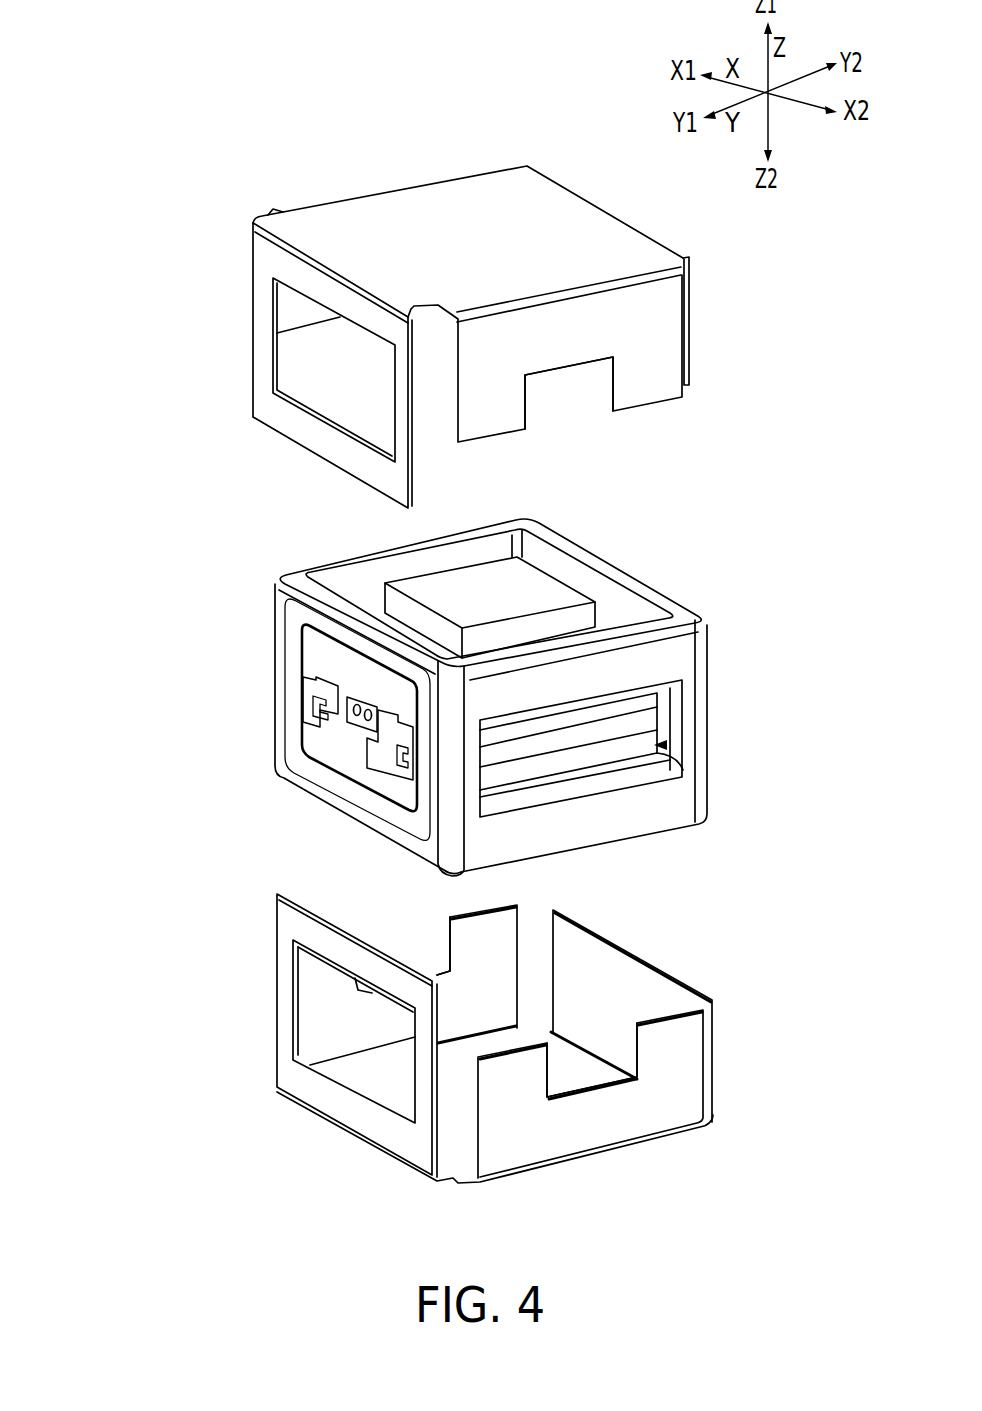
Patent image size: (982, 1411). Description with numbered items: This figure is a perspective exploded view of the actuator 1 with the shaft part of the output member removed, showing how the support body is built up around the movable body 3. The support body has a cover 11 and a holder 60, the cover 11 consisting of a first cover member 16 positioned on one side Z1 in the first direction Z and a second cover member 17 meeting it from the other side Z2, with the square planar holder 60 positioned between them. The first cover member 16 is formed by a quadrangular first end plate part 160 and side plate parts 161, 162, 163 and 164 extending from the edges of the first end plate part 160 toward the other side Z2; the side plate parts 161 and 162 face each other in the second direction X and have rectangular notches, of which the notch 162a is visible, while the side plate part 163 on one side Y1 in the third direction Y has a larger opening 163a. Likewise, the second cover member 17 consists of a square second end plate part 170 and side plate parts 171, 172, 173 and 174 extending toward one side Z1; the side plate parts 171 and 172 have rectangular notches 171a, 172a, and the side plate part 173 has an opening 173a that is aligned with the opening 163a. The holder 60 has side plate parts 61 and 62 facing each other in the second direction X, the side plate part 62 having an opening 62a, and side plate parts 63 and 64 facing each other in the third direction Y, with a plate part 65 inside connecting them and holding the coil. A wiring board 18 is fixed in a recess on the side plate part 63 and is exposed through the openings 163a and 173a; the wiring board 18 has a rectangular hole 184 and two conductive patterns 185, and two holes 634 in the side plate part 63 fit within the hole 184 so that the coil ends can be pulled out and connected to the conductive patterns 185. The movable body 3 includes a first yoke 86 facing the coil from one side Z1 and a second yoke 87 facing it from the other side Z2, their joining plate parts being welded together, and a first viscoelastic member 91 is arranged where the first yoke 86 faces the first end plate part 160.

The actuator 1 is at (208, 162).
The movable body 3 is at (667, 745).
The cover 11 is at (118, 714).
The first cover member 16 is at (257, 425).
The second cover member 17 is at (278, 921).
The wiring board 18 is at (303, 642).
The holder 60 is at (373, 565).
The side plate part 61 is at (342, 572).
The side plate part 62 is at (683, 667).
The opening 62a is at (670, 724).
The side plate part 63 is at (285, 598).
The side plate part 64 is at (603, 583).
The plate part 65 is at (310, 623).
The first yoke 86 is at (628, 710).
The second yoke 87 is at (628, 750).
The first viscoelastic member 91 is at (537, 582).
The first end plate part 160 is at (438, 197).
The side plate part 161 is at (287, 295).
The side plate part 162 is at (675, 342).
The notch 162a is at (618, 387).
The side plate part 163 is at (253, 373).
The opening 163a is at (397, 422).
The side plate part 164 is at (690, 280).
The second end plate part 170 is at (456, 1148).
The side plate part 171 is at (312, 980).
The notch 171a is at (450, 960).
The side plate part 172 is at (548, 1143).
The notch 172a is at (638, 1075).
The side plate part 173 is at (362, 1118).
The opening 173a is at (340, 1087).
The side plate part 174 is at (658, 985).
The hole 184 is at (365, 733).
The conductive patterns 185 is at (308, 697).
The holes 634 is at (362, 727).